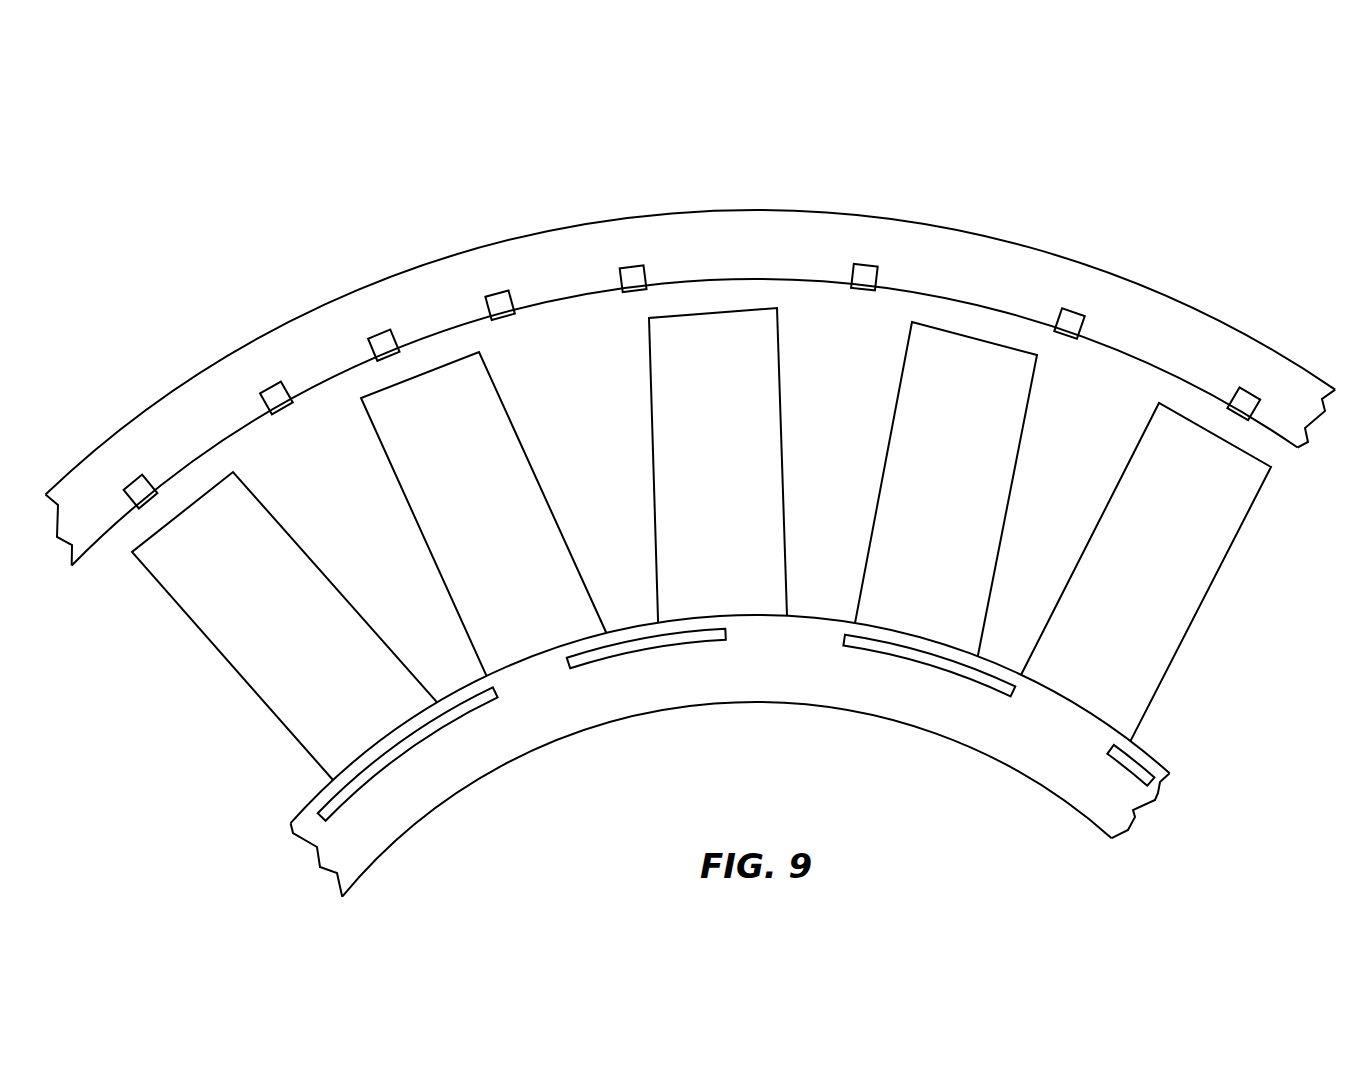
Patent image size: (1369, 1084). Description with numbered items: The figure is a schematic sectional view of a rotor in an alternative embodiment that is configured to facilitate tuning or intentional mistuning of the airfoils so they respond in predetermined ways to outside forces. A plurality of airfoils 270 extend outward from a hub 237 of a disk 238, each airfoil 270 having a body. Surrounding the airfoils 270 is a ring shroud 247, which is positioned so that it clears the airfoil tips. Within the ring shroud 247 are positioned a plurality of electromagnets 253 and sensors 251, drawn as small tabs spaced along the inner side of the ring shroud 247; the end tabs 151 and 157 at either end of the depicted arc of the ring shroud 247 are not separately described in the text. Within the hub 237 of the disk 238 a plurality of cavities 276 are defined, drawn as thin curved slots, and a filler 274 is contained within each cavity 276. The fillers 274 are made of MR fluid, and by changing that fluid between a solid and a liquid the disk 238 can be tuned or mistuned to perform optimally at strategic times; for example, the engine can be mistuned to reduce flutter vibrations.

The first end tab 151 is at (176, 293).
The second end tab 157 is at (1246, 390).
The hub 237 is at (1123, 803).
The disk 238 is at (1055, 815).
The ring shroud 247 is at (240, 345).
The sensor 251 is at (633, 266).
The electromagnet 253 is at (277, 384).
The airfoil 270 is at (621, 480).
The filler 274 is at (364, 784).
The cavity 276 is at (456, 719).